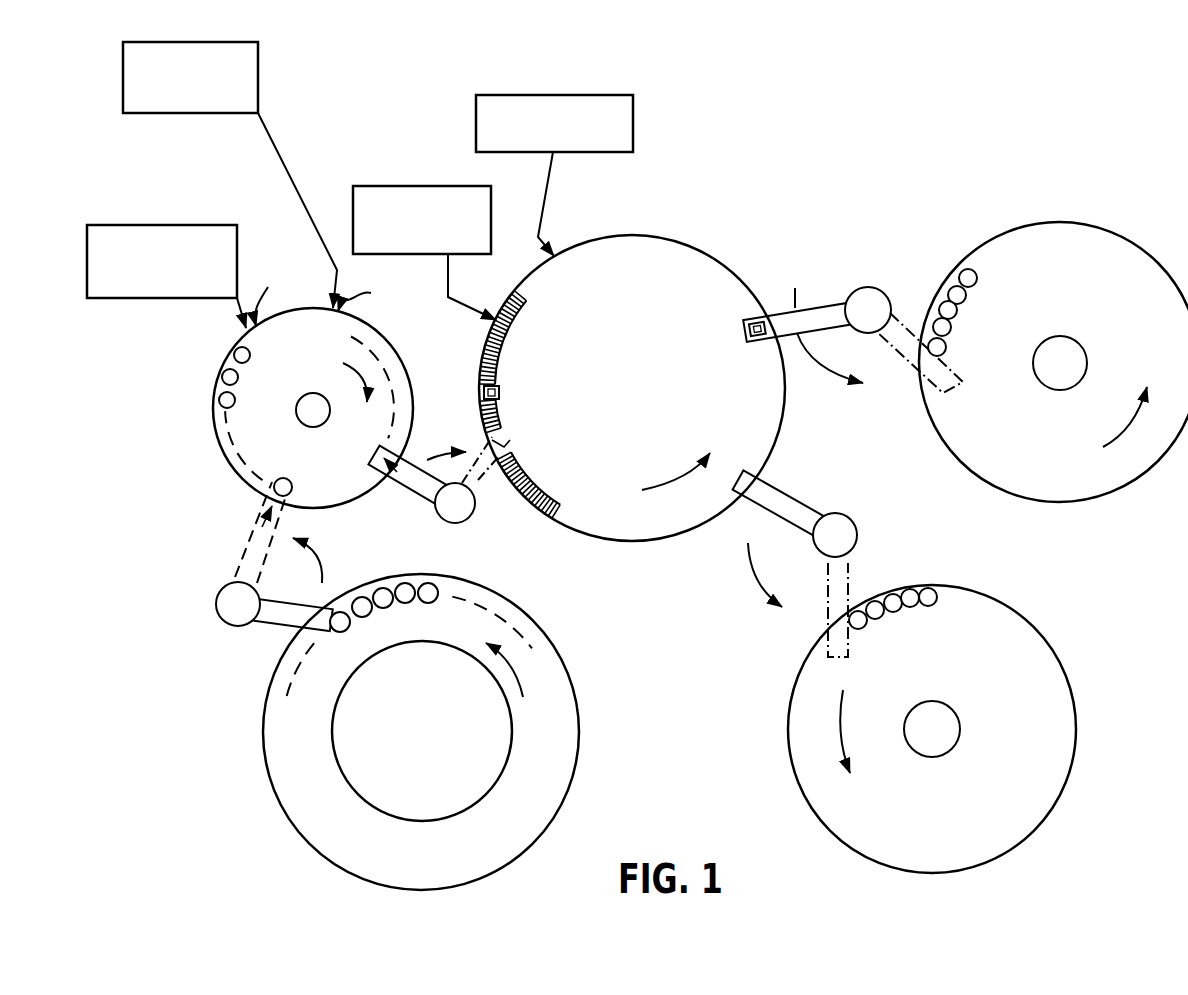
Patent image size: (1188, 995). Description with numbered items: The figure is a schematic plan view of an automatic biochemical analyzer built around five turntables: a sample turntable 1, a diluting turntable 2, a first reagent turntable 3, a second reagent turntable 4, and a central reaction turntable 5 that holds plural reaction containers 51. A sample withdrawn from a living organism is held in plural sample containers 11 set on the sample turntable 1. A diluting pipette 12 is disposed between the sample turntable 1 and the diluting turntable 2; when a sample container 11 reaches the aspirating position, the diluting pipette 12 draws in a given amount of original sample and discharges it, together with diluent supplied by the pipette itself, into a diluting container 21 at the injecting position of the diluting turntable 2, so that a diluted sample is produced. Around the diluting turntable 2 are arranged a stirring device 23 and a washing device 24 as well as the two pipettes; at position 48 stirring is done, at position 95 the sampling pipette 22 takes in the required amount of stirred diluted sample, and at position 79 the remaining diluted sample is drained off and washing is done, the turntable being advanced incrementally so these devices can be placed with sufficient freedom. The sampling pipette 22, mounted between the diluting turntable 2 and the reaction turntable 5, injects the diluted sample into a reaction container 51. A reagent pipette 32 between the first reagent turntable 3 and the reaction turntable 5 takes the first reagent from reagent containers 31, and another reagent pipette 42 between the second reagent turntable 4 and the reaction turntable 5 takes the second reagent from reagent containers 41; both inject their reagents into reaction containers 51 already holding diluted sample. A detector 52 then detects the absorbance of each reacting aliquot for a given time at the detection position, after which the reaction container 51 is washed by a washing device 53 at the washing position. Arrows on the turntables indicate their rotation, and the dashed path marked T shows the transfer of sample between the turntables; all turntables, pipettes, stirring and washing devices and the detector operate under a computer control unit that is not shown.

The sample turntable 1 is at (563, 660).
The diluting turntable 2 is at (217, 405).
The first reagent turntable 3 is at (1117, 235).
The second reagent turntable 4 is at (1060, 664).
The reaction turntable 5 is at (664, 237).
The sample container 11 is at (430, 582).
The diluting pipette 12 is at (243, 560).
The diluting container 21 is at (234, 352).
The sampling pipette 22 is at (475, 483).
The stirring device 23 is at (158, 224).
The washing device 24 is at (263, 72).
The reagent container 31 is at (965, 267).
The reagent pipette 32 is at (822, 318).
The reagent container 41 is at (936, 590).
The reagent pipette 42 is at (803, 509).
The stirring position 48 is at (274, 290).
The reaction container 51 is at (500, 392).
The detector 52 is at (562, 95).
The washing device 53 is at (388, 185).
The draining and washing position 79 is at (372, 294).
The sampling position 95 is at (390, 478).
The article being transferred T is at (263, 523).